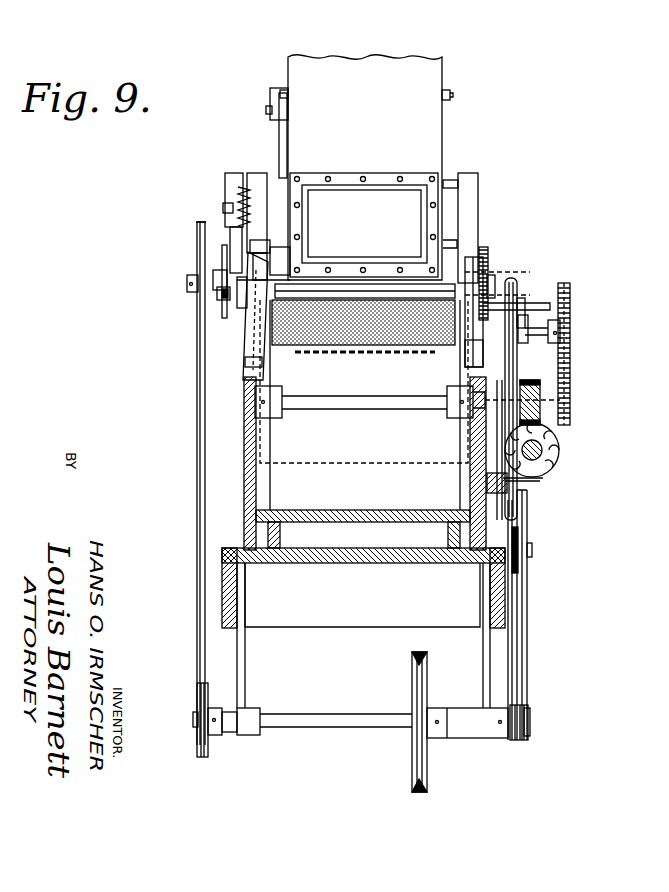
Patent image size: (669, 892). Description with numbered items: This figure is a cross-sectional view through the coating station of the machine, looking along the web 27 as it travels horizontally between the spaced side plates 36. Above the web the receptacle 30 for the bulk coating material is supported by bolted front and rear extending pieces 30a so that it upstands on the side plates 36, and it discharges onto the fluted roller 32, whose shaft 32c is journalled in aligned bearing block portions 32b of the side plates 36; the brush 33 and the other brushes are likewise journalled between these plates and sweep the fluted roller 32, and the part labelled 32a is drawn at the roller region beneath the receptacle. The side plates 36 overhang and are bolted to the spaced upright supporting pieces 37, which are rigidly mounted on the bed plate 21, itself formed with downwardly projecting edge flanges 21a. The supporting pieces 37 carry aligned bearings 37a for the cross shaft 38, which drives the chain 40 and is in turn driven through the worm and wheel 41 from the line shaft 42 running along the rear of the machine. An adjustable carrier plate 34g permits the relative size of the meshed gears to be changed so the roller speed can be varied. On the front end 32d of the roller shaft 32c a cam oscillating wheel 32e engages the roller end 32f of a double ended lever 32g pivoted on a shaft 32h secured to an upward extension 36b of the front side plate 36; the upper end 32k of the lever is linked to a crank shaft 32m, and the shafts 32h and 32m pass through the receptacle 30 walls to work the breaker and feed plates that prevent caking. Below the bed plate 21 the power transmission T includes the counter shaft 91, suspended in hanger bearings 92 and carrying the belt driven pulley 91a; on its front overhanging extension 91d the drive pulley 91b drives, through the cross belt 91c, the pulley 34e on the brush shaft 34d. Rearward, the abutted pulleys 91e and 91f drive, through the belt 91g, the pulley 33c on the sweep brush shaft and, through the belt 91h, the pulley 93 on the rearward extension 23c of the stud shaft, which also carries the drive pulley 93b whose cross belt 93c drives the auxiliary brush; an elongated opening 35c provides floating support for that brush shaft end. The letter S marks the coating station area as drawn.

The receptacle 30 is at (435, 127).
The feeding station S is at (462, 142).
The crank shaft 32m is at (281, 92).
The upper end of the lever 32k is at (277, 128).
The shaft 32h is at (226, 180).
The double ended lever 32g is at (273, 173).
The cam oscillating wheel 32e is at (222, 258).
The front end of the fluted roller shaft 32d is at (213, 278).
The shaft 34d is at (186, 285).
The roller end of the lever 32f is at (218, 295).
The pulley 34e is at (197, 318).
The fluted roller 32 is at (283, 300).
The side plate 36 is at (250, 345).
The upward extension of the front side plate 36b is at (258, 210).
The extending pieces 30a is at (277, 240).
The gate bar 32a is at (345, 300).
The web 27 is at (402, 347).
The brush 33 is at (283, 346).
The cross shaft 38 is at (399, 404).
The adjustable carrier plate 34g is at (497, 427).
The chain 40 is at (570, 371).
The upright supporting pieces 37 is at (250, 483).
The bed plate 21 is at (348, 556).
The edge flanges 21a is at (222, 565).
The cross belt 91c is at (201, 607).
The drive pulley 91b is at (195, 747).
The front overhanging extension of the counter shaft 91d is at (230, 735).
The hanger bearings 92 is at (253, 736).
The counter shaft 91 is at (342, 728).
The belt driven pulley 91a is at (427, 770).
The pulley 91e is at (518, 740).
The pulley 91f is at (530, 722).
The belt 91g is at (508, 655).
The belt 91h is at (526, 662).
The pulley 93 is at (527, 583).
The rearward extension of the stud shaft 23c is at (533, 553).
The drive pulley 93b is at (500, 530).
The cross belt 93c is at (540, 481).
The worm and wheel 41 is at (568, 458).
The line shaft 42 is at (543, 445).
The bearings 37a is at (542, 385).
The elongated opening 35c is at (567, 290).
The power transmission T is at (587, 295).
The pulley 33c is at (571, 310).
The bearing block portions 32b is at (516, 280).
The shaft 32c is at (484, 272).